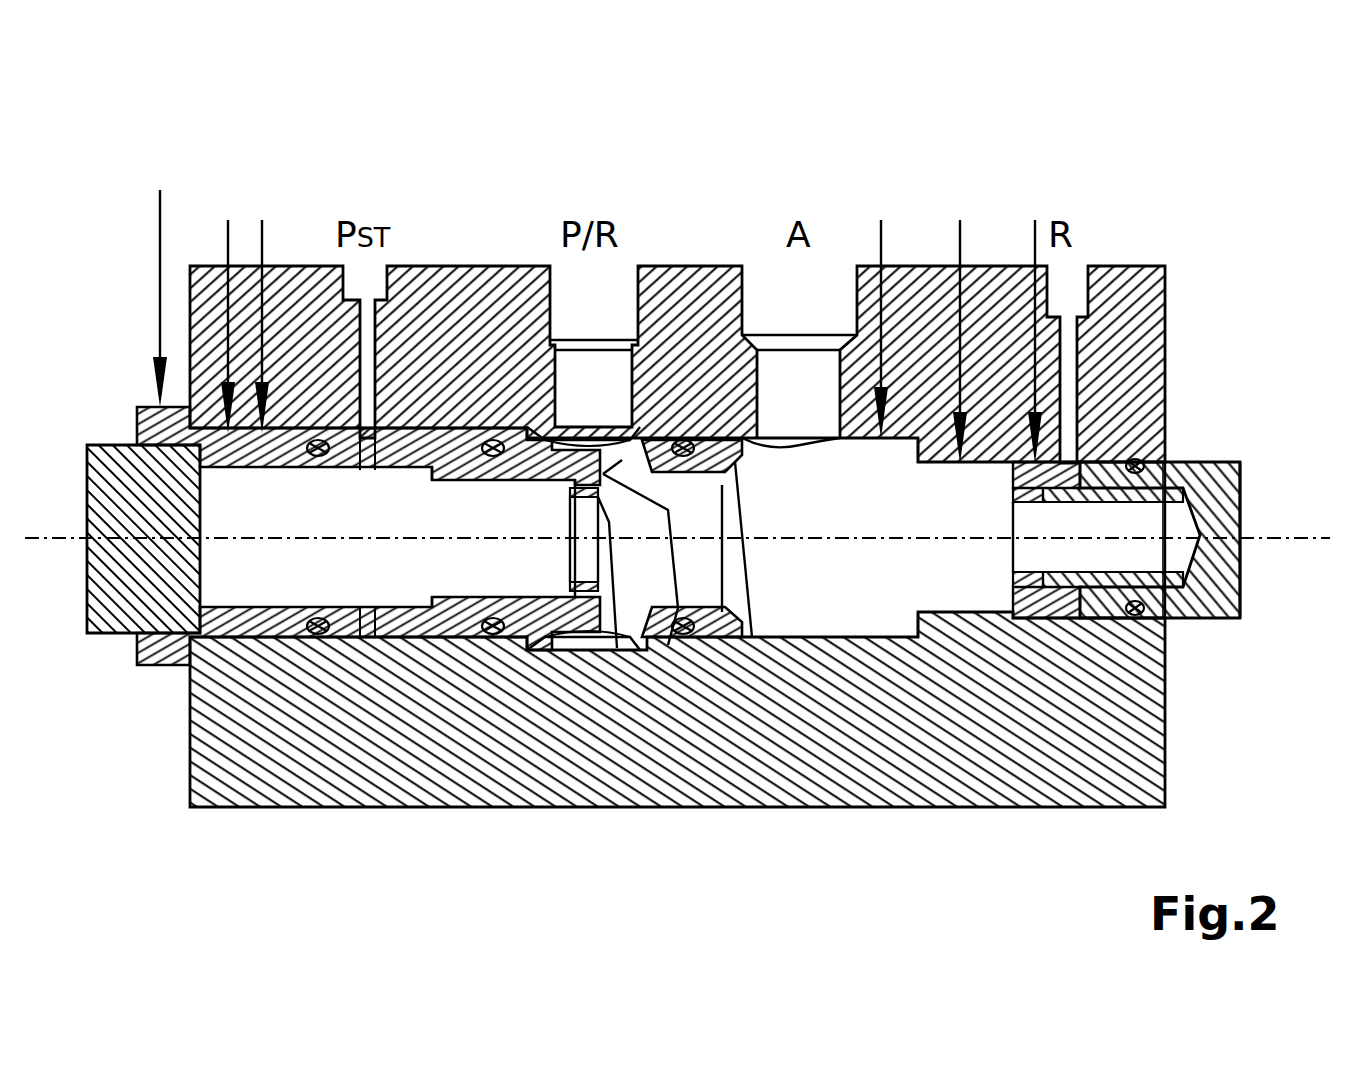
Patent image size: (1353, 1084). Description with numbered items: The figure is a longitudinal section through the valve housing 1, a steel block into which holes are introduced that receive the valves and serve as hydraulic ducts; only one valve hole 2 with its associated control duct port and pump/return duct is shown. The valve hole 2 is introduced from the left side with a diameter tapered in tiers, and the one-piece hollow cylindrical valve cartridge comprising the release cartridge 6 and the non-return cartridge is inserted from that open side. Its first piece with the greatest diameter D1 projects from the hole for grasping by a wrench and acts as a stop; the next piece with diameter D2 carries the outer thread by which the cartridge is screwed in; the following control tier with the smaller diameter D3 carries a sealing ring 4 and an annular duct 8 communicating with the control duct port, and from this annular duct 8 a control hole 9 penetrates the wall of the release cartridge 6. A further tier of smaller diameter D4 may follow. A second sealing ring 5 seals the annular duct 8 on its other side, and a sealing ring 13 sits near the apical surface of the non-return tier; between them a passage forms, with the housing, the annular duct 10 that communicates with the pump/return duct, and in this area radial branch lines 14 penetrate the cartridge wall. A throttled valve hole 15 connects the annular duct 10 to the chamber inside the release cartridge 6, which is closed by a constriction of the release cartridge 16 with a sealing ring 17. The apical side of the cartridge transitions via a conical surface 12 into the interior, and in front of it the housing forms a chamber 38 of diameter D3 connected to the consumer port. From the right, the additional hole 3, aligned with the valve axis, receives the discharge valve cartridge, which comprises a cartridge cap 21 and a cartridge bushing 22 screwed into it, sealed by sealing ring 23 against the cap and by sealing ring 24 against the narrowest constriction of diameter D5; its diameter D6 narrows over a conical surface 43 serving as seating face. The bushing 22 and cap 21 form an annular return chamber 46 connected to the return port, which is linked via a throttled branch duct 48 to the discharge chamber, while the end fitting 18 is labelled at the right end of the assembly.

The valve housing 1 is at (203, 300).
The valve hole 2 is at (336, 558).
The additional hole 3 is at (1135, 558).
The sealing ring 4 is at (318, 642).
The sealing ring 5 is at (492, 640).
The release cartridge 6 is at (455, 450).
The annular duct 8 is at (380, 438).
The control hole 9 is at (340, 470).
The annular duct 10 is at (618, 428).
The conical surface 12 is at (718, 432).
The sealing ring 13 is at (745, 620).
The radial branch lines 14 is at (683, 636).
The throttled valve hole 15 is at (553, 462).
The constriction of the release cartridge 16 is at (540, 597).
The sealing ring 17 is at (610, 590).
The end fitting 18 is at (1236, 395).
The cartridge cap 21 is at (1200, 455).
The cartridge bushing 22 is at (1128, 457).
The sealing ring 23 is at (1185, 504).
The sealing ring 24 is at (1098, 598).
The chamber 38 is at (898, 558).
The conical surface 43 is at (1142, 618).
The annular return chamber 46 is at (1075, 470).
The throttled branch duct 48 is at (1085, 518).
The diameter D1 is at (152, 888).
The diameter D2 is at (228, 688).
The diameter D3 is at (262, 688).
The diameter D4 is at (960, 660).
The diameter D5 is at (1035, 665).
The diameter D6 is at (583, 520).